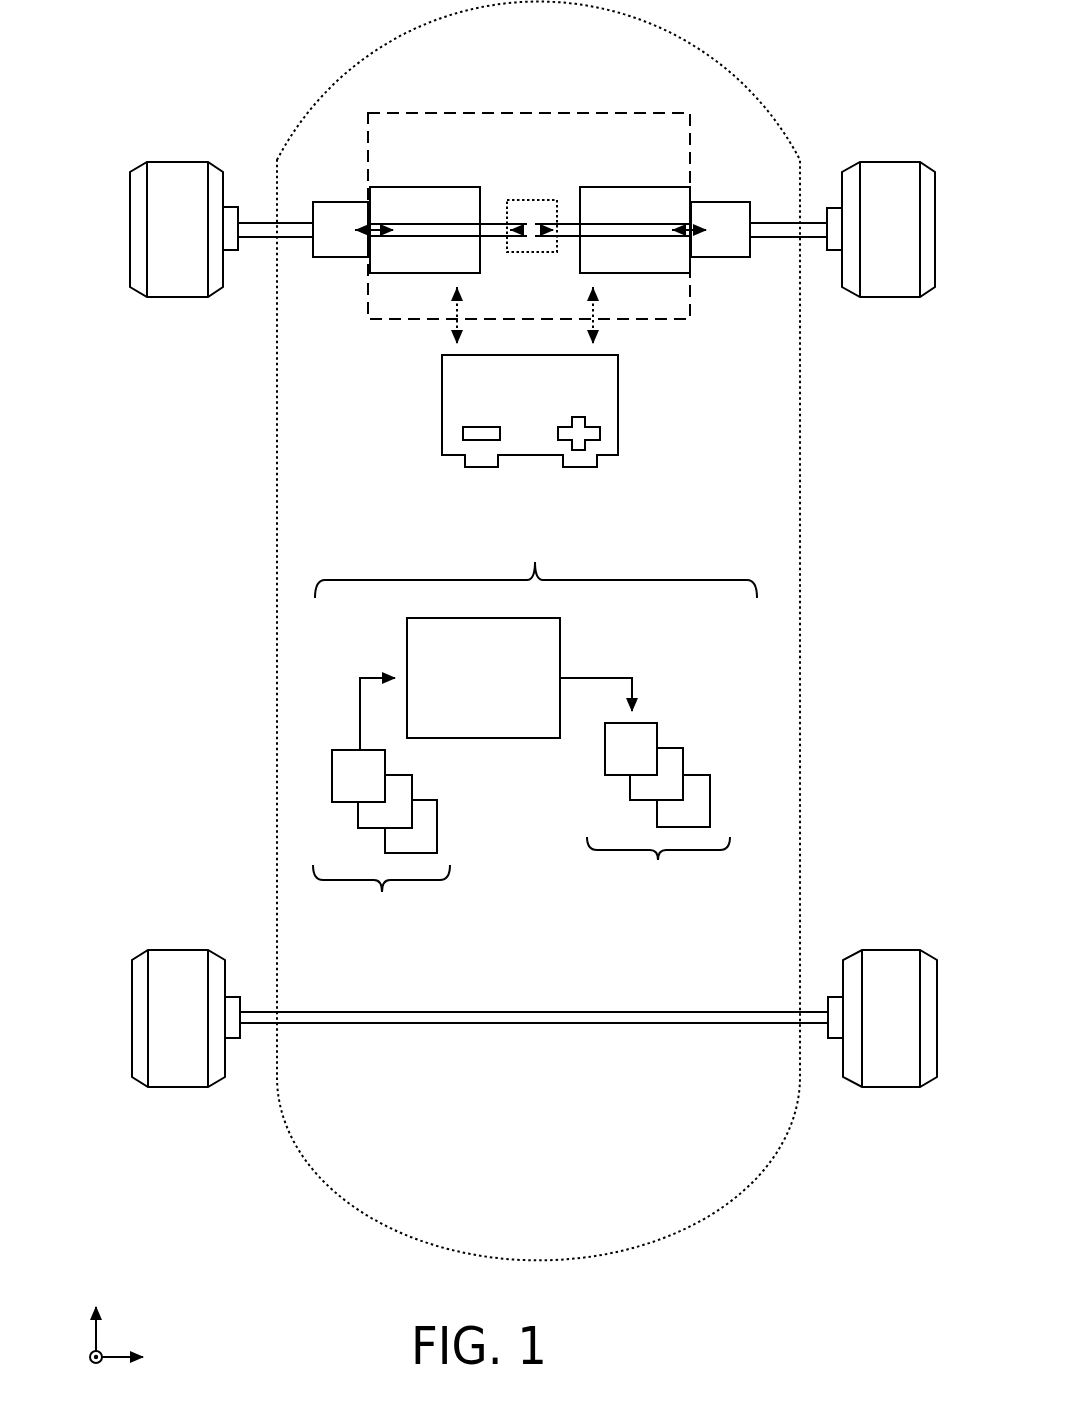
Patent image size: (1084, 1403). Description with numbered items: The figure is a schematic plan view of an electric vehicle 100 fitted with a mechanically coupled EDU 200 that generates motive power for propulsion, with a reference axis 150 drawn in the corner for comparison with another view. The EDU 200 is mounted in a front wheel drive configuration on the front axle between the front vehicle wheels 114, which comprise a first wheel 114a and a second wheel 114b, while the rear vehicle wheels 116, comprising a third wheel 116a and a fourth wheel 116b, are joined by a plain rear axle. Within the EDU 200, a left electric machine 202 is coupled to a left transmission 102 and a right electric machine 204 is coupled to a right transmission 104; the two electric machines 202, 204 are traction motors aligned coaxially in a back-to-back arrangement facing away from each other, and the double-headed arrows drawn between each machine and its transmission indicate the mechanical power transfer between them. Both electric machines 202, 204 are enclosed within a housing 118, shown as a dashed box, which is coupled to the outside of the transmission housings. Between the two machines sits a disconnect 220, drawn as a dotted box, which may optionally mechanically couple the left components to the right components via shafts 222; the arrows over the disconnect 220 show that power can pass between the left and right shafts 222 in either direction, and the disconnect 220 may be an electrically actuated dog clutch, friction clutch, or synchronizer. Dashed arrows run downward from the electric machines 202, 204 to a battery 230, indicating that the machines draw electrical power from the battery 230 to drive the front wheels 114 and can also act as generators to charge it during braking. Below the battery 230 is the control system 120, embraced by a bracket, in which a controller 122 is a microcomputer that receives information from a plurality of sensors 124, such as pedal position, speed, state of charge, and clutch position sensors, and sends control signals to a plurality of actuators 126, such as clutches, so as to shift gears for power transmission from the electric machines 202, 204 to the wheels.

The electric vehicle 100 is at (273, 52).
The left transmission 102 is at (316, 202).
The right transmission 104 is at (752, 202).
The front vehicle wheels 114 is at (235, 125).
The first wheel 114a is at (157, 162).
The second wheel 114b is at (900, 165).
The rear vehicle wheels 116 is at (212, 875).
The third wheel 116a is at (170, 948).
The fourth wheel 116b is at (905, 950).
The housing 118 is at (550, 113).
The control system 120 is at (536, 548).
The controller 122 is at (496, 684).
The sensors 124 is at (381, 856).
The actuators 126 is at (658, 826).
The reference axis 150 is at (145, 1326).
The mechanically coupled EDU 200 is at (447, 90).
The left electric machine 202 is at (403, 186).
The right electric machine 204 is at (653, 186).
The disconnect 220 is at (545, 252).
The shafts 222 is at (572, 222).
The battery 230 is at (610, 358).